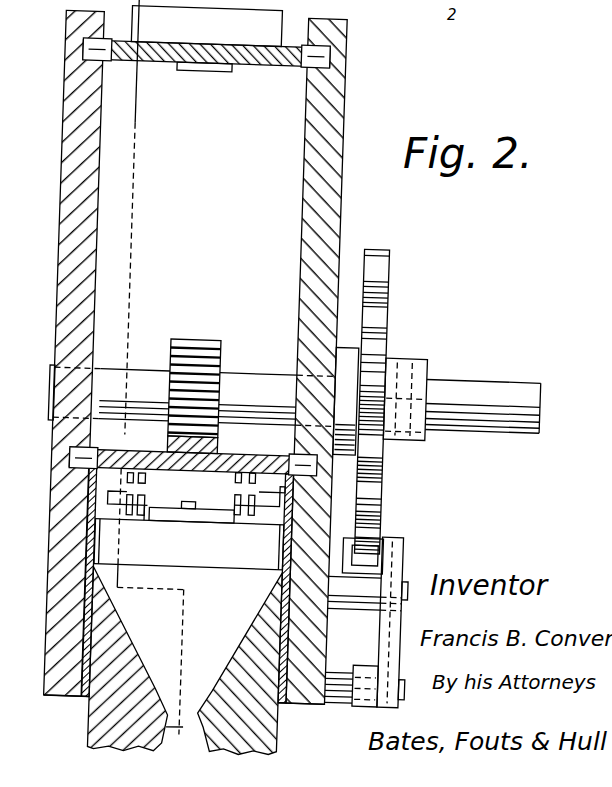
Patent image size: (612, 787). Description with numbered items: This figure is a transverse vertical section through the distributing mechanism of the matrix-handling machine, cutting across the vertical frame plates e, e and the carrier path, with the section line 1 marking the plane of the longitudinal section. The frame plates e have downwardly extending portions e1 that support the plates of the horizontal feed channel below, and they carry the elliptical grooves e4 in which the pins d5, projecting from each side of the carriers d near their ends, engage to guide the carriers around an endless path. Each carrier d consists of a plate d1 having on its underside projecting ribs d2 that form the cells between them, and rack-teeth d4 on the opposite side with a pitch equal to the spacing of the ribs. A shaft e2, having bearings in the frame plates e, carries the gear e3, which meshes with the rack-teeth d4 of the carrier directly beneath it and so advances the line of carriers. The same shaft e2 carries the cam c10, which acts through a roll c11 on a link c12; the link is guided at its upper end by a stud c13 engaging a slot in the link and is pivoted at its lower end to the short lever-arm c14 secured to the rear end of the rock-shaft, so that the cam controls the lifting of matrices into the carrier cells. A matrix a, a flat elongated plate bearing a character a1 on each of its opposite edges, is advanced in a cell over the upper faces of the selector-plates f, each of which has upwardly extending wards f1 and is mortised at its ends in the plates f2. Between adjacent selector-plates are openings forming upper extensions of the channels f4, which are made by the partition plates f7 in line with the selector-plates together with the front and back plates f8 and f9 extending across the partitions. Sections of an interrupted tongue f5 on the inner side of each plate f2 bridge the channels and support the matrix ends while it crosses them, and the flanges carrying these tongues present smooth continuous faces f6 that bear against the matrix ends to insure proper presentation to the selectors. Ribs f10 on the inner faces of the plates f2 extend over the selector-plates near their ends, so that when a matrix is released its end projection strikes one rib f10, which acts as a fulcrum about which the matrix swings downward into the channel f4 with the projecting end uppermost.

The vertical frame plates e is at (89, 234).
The downwardly extending portions of the frame plates e1 is at (73, 696).
The shaft e2 is at (294, 400).
The gear e3 is at (220, 344).
The grooves e4 is at (91, 65).
The carriers d is at (160, 295).
The carrier plate d1 is at (249, 64).
The projecting ribs d2 is at (44, 515).
The rack-teeth d4 is at (201, 68).
The pins d5 is at (38, 455).
The selector-plates f is at (189, 544).
The wards f1 is at (149, 522).
The end plates f2 is at (88, 496).
The channels f4 is at (203, 621).
The interrupted tongue f5 is at (178, 472).
The smooth continuous face f6 is at (199, 474).
The partition plates f7 is at (190, 698).
The front plate f8 is at (136, 658).
The back plate f9 is at (279, 726).
The ribs f10 is at (114, 523).
The matrix a is at (192, 500).
The characters a1 is at (286, 487).
The cam c10 is at (384, 314).
The roll c11 is at (388, 534).
The link c12 is at (405, 615).
The stud c13 is at (407, 597).
The short lever-arm c14 is at (352, 677).
The section line 1 is at (175, 740).